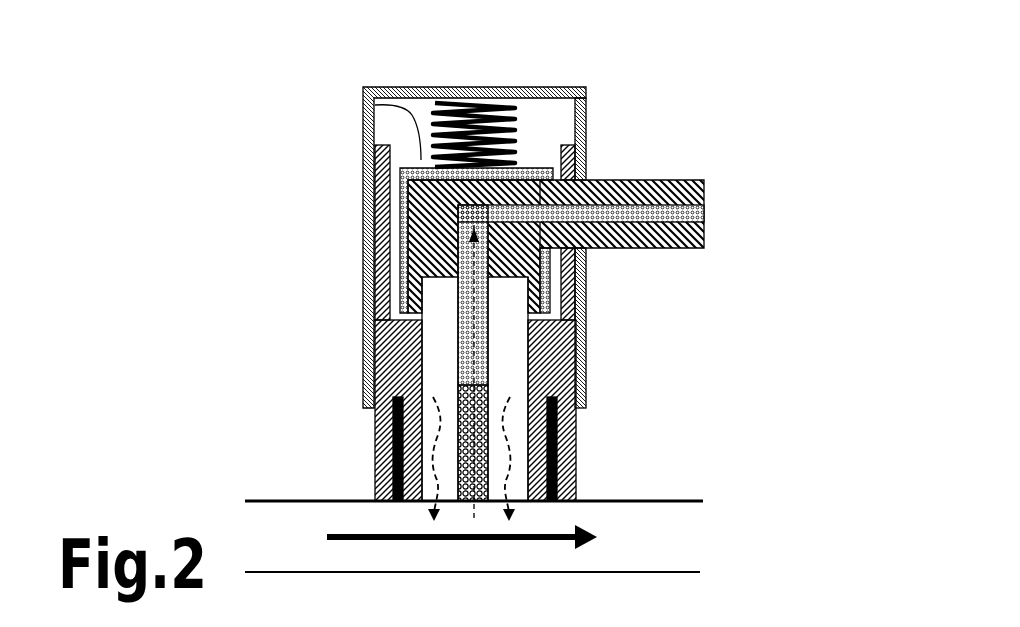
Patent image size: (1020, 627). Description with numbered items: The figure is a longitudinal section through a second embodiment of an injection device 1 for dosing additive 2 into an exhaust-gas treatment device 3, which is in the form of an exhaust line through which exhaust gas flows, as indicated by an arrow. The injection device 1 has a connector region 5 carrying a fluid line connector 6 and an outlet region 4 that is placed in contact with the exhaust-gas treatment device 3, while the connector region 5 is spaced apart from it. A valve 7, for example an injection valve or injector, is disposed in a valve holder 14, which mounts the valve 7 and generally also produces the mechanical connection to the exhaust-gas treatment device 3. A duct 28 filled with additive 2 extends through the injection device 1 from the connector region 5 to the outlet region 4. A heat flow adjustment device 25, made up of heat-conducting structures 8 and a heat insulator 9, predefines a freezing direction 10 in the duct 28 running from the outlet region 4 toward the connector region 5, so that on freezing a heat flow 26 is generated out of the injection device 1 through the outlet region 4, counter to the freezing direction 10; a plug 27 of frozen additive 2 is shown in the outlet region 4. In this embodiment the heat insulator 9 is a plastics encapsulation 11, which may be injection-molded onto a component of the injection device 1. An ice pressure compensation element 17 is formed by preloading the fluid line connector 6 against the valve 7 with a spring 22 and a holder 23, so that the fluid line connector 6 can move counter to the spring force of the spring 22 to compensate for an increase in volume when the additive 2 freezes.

The injection device 1 is at (240, 94).
The additive 2 is at (705, 213).
The exhaust-gas treatment device 3 is at (693, 500).
The outlet region 4 is at (453, 521).
The connector region 5 is at (493, 50).
The fluid line connector 6 is at (705, 180).
The valve 7 is at (400, 356).
The heat-conducting structure 8 is at (395, 470).
The heat insulator 9 is at (363, 115).
The freezing direction 10 is at (488, 362).
The plastics encapsulation 11 is at (375, 203).
The valve holder 14 is at (575, 417).
The ice pressure compensation element 17 is at (535, 118).
The spring 22 is at (422, 115).
The holder 23 is at (586, 122).
The heat flow adjustment device 25 is at (410, 155).
The heat flow 26 is at (520, 481).
The plug 27 is at (493, 447).
The duct 28 is at (495, 338).